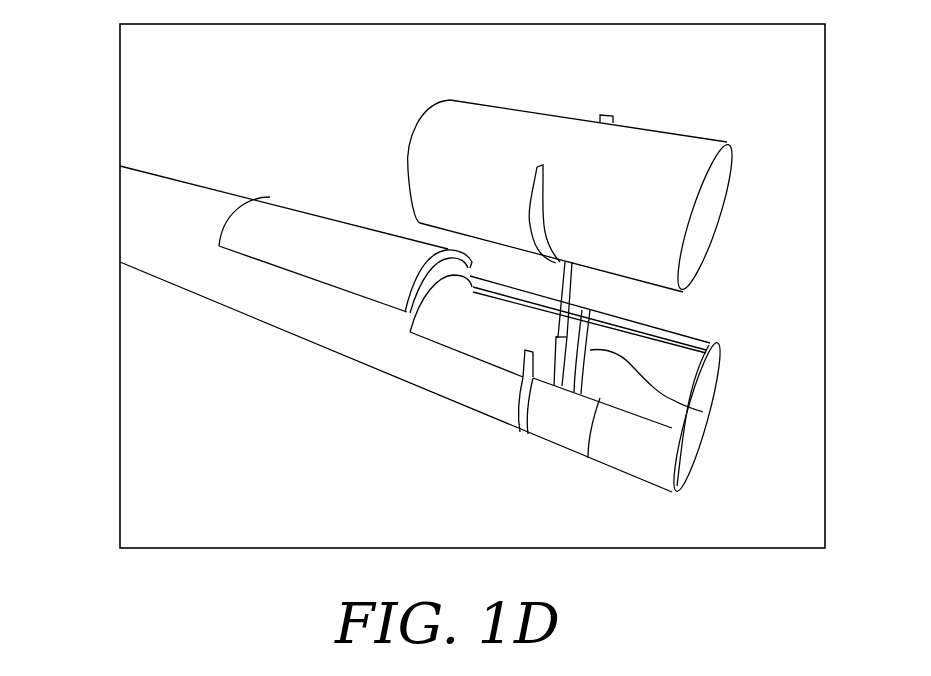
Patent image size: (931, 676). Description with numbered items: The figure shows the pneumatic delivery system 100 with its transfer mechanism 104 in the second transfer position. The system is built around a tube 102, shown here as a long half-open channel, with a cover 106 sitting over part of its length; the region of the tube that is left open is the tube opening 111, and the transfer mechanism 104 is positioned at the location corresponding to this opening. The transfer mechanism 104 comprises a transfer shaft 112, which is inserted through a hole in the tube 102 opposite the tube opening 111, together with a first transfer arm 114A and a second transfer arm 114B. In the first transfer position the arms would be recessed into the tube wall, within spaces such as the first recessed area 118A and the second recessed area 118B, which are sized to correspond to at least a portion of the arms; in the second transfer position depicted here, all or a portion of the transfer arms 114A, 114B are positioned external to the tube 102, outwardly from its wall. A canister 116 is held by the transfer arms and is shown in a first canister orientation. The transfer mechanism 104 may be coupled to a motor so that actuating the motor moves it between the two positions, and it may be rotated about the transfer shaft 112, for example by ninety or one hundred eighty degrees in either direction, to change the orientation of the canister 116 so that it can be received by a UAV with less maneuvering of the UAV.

The pneumatic delivery system 100 is at (86, 144).
The tube 102 is at (267, 287).
The transfer mechanism 104 is at (577, 293).
The cover 106 is at (302, 240).
The tube opening 111 is at (482, 338).
The transfer shaft 112 is at (703, 413).
The first transfer arm 114A is at (607, 112).
The second transfer arm 114B is at (537, 197).
The canister 116 is at (727, 198).
The first recessed area 118A is at (522, 430).
The second recessed area 118B is at (588, 458).